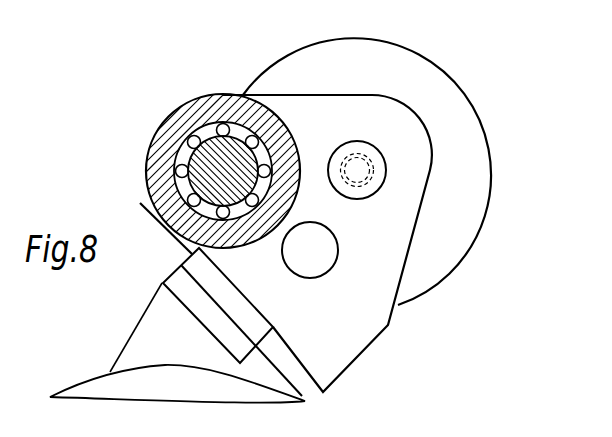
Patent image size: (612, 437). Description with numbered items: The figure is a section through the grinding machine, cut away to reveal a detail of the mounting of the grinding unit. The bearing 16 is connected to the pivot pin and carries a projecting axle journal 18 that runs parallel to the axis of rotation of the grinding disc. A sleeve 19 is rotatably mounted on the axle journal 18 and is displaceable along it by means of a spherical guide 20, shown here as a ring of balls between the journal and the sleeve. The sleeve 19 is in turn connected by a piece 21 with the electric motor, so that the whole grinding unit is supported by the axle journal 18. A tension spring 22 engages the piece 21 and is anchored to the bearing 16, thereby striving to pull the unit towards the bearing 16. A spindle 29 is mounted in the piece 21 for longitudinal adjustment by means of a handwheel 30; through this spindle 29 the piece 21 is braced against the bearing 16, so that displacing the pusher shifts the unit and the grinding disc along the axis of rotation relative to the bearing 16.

The bearing 16 is at (110, 385).
The axle journal 18 is at (213, 183).
The sleeve 19 is at (163, 152).
The spherical guide 20 is at (189, 135).
The piece 21 is at (377, 322).
The tension spring 22 is at (313, 279).
The spindle 29 is at (355, 170).
The handwheel 30 is at (455, 95).